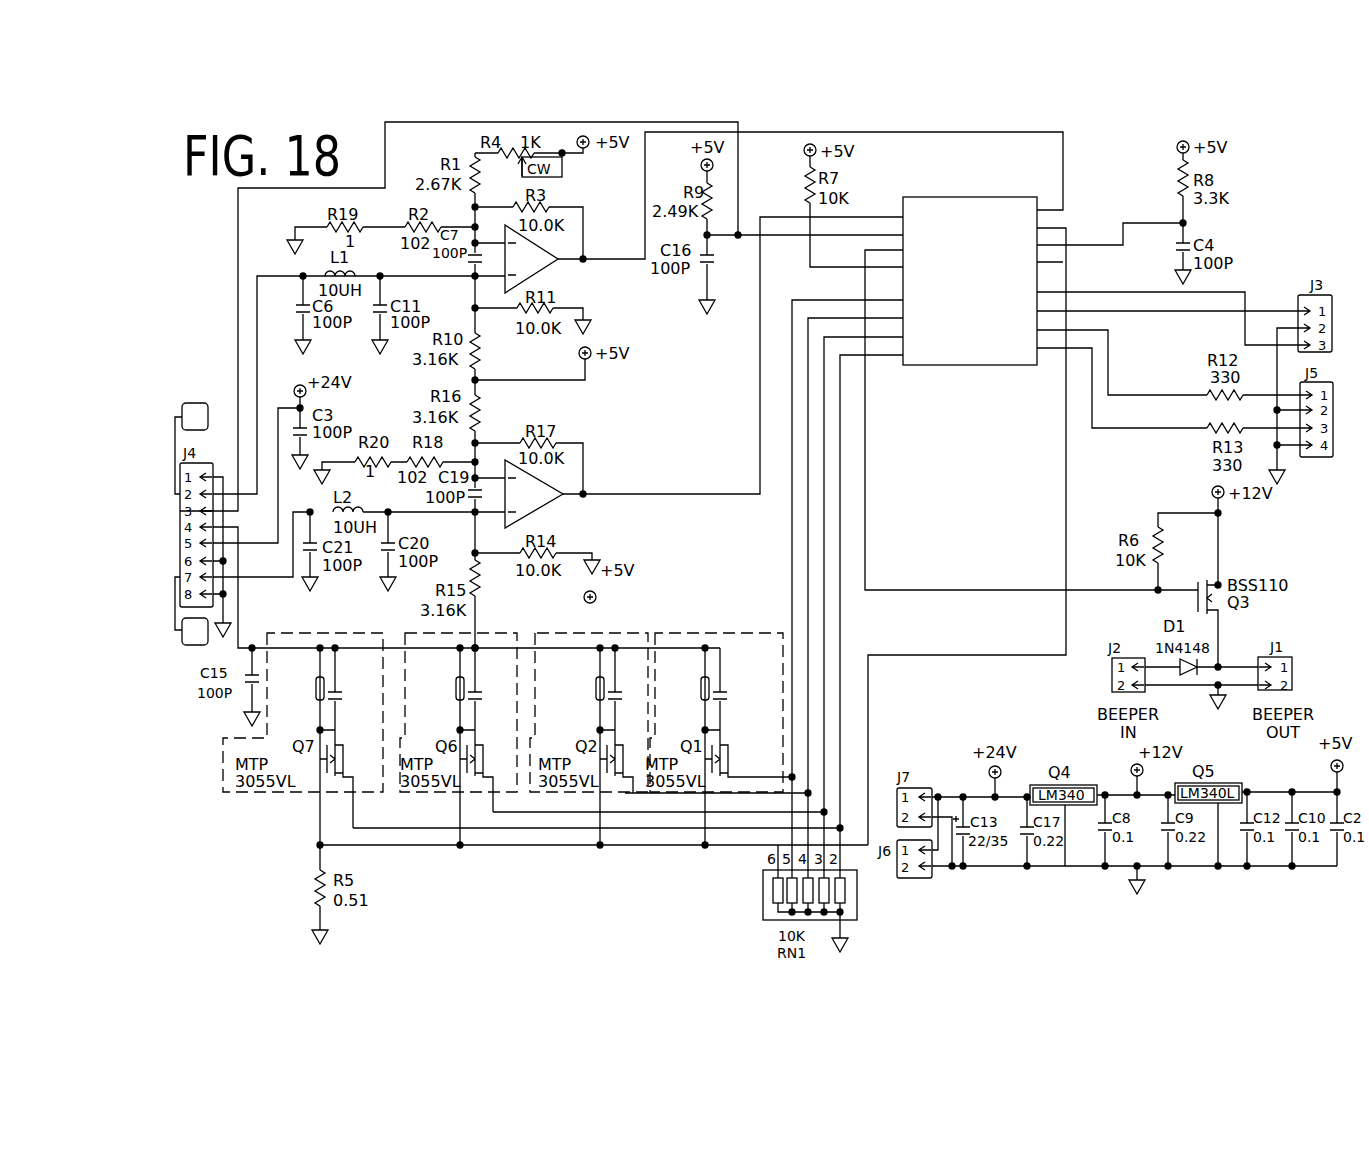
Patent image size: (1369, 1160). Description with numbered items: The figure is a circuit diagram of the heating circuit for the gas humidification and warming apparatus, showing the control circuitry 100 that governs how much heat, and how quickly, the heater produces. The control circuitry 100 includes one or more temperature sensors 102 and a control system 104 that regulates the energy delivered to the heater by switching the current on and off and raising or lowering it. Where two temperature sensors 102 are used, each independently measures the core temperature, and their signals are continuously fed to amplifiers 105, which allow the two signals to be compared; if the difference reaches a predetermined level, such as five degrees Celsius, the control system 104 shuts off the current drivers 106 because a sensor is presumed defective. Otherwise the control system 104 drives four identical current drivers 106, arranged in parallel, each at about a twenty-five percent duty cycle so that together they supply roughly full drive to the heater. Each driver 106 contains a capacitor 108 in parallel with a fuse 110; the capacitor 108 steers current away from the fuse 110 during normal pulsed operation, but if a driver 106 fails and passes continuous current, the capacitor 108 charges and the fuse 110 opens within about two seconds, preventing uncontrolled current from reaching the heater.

The control circuitry 100 is at (226, 232).
The temperature sensor 102 is at (195, 401).
The control system 104 is at (975, 197).
The amplifier 105 is at (546, 241).
The current driver 106 is at (750, 600).
The capacitor 108 is at (337, 690).
The fuse 110 is at (316, 683).